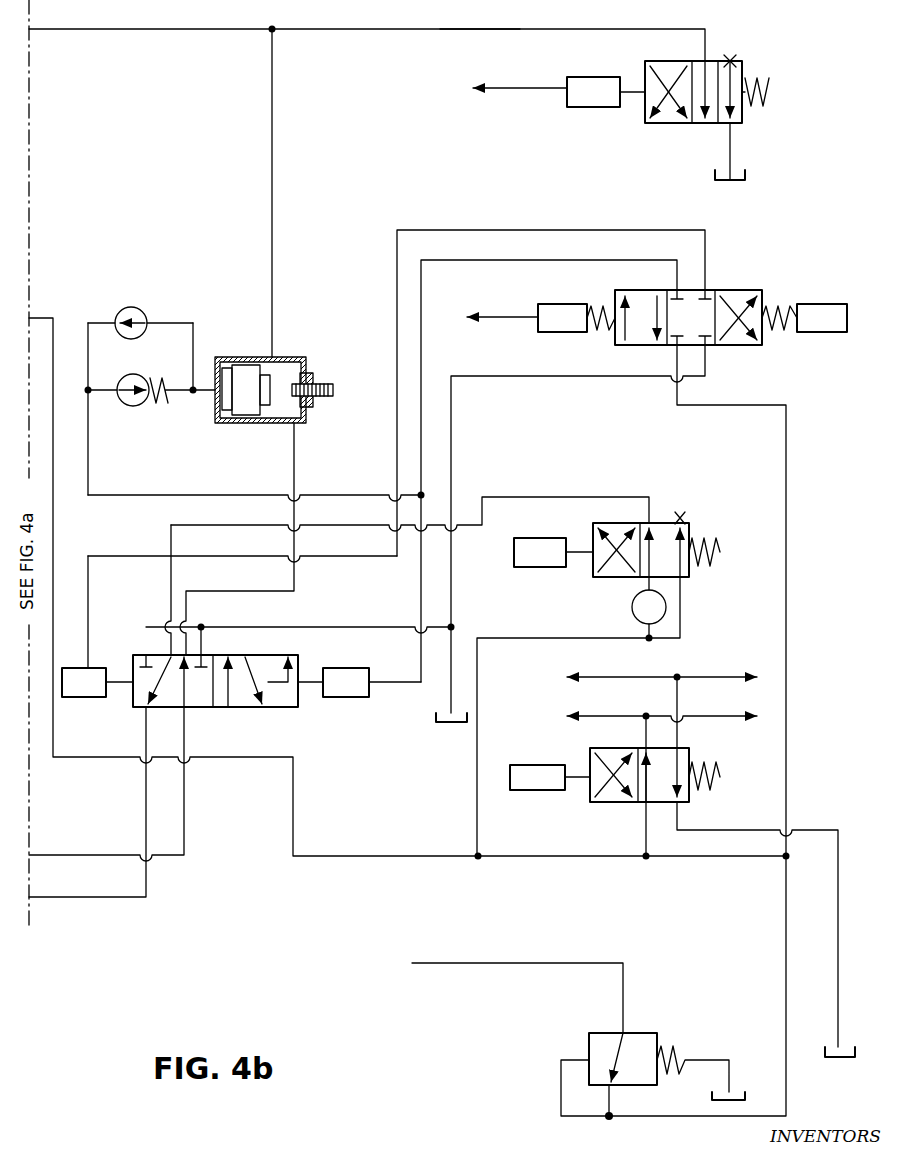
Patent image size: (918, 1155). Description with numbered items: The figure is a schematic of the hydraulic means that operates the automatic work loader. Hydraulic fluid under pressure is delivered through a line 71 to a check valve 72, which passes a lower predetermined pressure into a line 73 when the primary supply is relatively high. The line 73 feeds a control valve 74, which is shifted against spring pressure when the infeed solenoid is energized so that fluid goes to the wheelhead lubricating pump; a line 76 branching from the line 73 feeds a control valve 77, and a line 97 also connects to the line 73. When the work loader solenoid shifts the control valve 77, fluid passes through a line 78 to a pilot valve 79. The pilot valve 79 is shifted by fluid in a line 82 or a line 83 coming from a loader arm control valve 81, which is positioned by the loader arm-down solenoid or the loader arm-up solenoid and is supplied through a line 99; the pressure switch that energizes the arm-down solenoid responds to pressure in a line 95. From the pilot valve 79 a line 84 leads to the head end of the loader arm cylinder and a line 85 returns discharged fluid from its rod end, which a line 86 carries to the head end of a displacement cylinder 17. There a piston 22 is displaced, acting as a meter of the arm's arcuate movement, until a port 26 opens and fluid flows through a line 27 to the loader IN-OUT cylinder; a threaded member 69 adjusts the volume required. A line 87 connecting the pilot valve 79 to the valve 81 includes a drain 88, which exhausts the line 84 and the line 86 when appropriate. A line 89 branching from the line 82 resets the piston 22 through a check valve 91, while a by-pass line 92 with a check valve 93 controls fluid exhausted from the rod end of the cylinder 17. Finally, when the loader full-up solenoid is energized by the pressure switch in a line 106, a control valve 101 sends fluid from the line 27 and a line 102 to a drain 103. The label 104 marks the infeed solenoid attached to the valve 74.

The line 27 is at (91, 33).
The line 102 is at (481, 29).
The line 106 is at (521, 88).
The control valve 101 is at (716, 63).
The drain 103 is at (748, 178).
The line 83 is at (620, 213).
The line 82 is at (592, 250).
The loader arm control valve 81 is at (729, 298).
The line 95 is at (518, 314).
The line 97 is at (60, 328).
The check valve 93 is at (138, 306).
The line 92 is at (178, 320).
The check valve 91 is at (137, 374).
The port 26 is at (274, 357).
The threaded member 69 is at (325, 388).
The piston 22 is at (246, 420).
The displacement cylinder 17 is at (281, 420).
The line 89 is at (170, 494).
The line 86 is at (302, 490).
The line 78 is at (585, 497).
The control valve 77 is at (616, 524).
The line 99 is at (787, 622).
The line 87 is at (320, 627).
The pilot valve 79 is at (245, 712).
The drain 88 is at (436, 721).
The line 76 is at (477, 786).
The solenoid 104 is at (494, 775).
The control valve 74 is at (614, 803).
The line 73 is at (580, 860).
The line 85 is at (95, 856).
The line 84 is at (100, 888).
The line 71 is at (596, 966).
The check valve 72 is at (638, 1044).